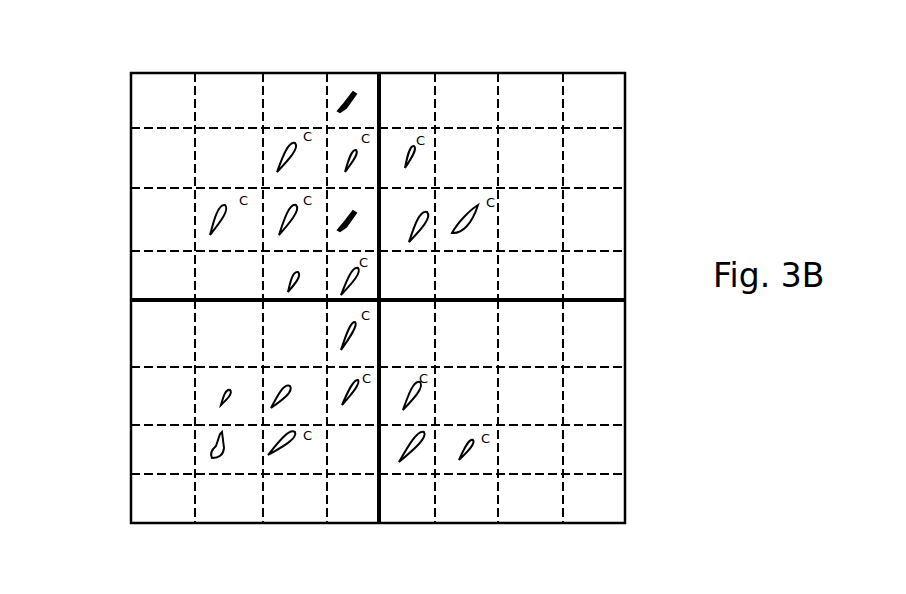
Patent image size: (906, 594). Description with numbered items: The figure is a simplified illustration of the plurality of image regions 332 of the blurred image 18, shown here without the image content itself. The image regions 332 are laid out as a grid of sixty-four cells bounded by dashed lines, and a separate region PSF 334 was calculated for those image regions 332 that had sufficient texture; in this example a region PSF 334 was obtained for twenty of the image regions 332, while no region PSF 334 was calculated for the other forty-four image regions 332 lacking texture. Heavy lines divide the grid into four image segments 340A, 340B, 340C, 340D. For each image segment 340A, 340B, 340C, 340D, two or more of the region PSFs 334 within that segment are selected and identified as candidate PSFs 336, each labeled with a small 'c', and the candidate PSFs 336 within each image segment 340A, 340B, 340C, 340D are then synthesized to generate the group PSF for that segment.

The blurred image 18 is at (377, 298).
The image regions 332 is at (136, 508).
The region PSF 334 is at (135, 446).
The candidate PSF 336 is at (174, 157).
The image segment 340A is at (120, 208).
The image segment 340B is at (630, 158).
The image segment 340C is at (120, 340).
The image segment 340D is at (630, 348).